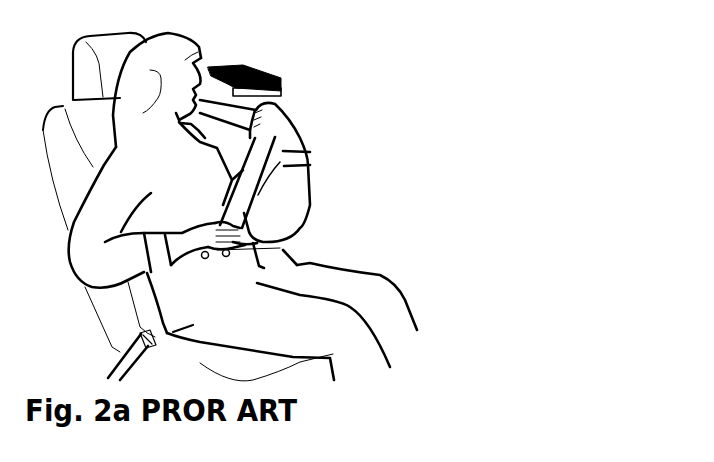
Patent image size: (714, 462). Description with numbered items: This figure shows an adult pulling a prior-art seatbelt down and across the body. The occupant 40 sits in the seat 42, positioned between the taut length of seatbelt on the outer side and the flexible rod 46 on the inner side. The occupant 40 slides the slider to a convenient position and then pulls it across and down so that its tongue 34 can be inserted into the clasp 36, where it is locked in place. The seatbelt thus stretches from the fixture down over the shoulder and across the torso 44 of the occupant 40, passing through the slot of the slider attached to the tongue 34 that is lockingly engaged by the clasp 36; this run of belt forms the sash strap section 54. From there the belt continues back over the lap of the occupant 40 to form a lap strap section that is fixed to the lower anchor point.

The occupant 40 is at (207, 59).
The seat 42 is at (118, 129).
The torso 44 is at (205, 180).
The sash strap section 54 is at (312, 152).
The tongue 34 is at (277, 243).
The clasp 36 is at (158, 338).
The flexible rod 46 is at (130, 360).